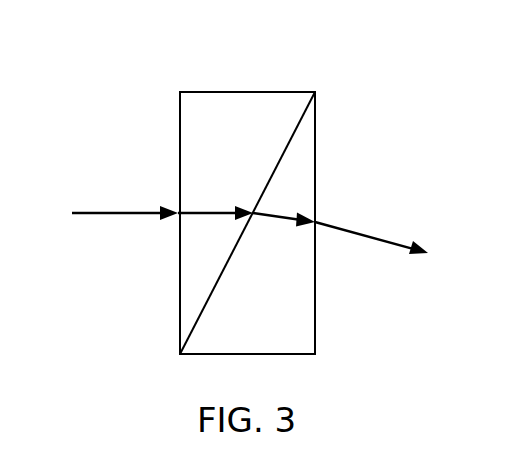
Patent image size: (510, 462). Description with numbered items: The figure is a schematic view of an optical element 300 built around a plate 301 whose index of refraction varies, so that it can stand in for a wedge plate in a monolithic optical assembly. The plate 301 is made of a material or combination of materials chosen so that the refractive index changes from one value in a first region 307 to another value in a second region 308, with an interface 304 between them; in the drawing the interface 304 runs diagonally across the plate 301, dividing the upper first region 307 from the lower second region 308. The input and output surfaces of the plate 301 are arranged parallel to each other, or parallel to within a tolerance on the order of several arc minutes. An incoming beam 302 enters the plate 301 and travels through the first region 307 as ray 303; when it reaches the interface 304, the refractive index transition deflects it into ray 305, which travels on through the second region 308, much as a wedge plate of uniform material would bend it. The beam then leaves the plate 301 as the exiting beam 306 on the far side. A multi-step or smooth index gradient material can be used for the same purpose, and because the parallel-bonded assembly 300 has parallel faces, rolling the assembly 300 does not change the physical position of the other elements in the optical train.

The optical element 300 is at (137, 87).
The plate 301 is at (258, 92).
The incoming beam 302 is at (148, 212).
The ray 303 is at (212, 212).
The interface 304 is at (203, 308).
The ray 305 is at (277, 212).
The output light beam 306 is at (343, 229).
The first region 307 is at (247, 152).
The second region 308 is at (286, 314).